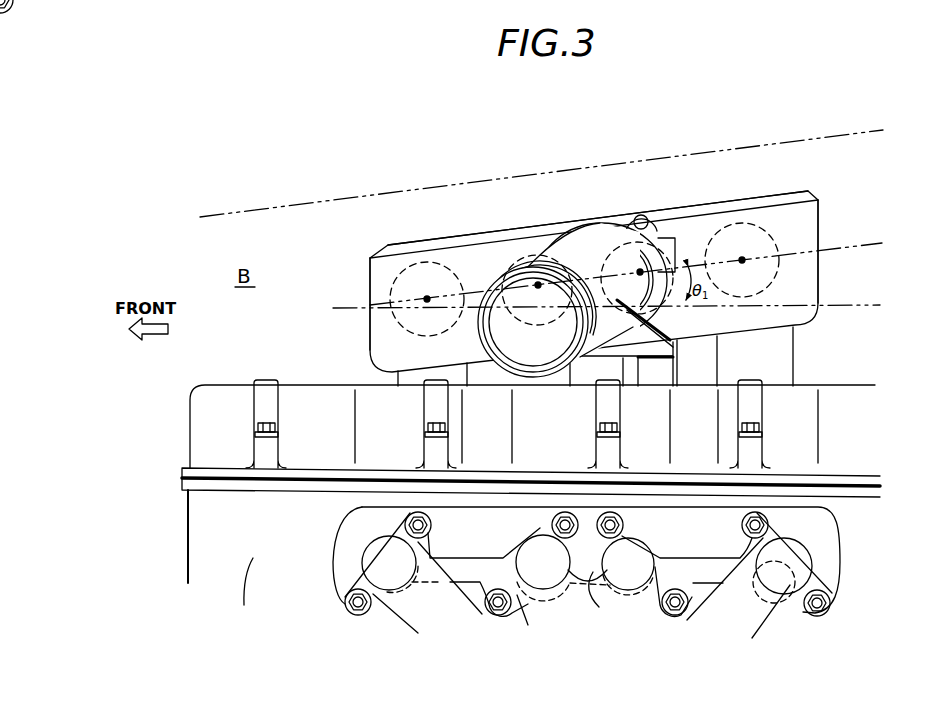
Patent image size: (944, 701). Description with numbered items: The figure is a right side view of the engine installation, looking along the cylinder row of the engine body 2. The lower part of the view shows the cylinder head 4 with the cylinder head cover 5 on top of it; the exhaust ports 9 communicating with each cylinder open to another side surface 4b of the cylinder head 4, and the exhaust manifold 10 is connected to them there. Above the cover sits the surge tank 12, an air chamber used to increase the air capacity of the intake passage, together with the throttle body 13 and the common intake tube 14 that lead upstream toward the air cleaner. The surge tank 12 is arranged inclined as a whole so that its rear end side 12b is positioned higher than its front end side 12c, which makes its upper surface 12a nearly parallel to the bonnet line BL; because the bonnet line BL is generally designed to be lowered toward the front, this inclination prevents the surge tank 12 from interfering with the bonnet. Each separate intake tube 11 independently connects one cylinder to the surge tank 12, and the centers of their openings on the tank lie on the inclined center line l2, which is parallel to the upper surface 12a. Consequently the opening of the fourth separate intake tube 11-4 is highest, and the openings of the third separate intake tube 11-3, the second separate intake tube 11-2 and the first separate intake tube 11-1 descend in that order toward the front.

The engine body 2 is at (170, 518).
The cylinder head 4 is at (182, 583).
The another side surface of the cylinder head 4b is at (238, 600).
The cylinder head cover 5 is at (205, 407).
The exhaust port 9 is at (422, 590).
The exhaust manifold 10 is at (393, 623).
The separate intake tube 11 is at (387, 378).
The first separate intake tube 11-1 is at (381, 252).
The second separate intake tube 11-2 is at (522, 252).
The third separate intake tube 11-3 is at (678, 258).
The fourth separate intake tube 11-4 is at (780, 270).
The surge tank 12 is at (777, 222).
The upper surface of the surge tank 12a is at (450, 243).
The rear end side of the surge tank 12b is at (820, 232).
The front end side of the surge tank 12c is at (370, 283).
The throttle body 13 is at (612, 228).
The common intake tube 14 is at (577, 252).
The bonnet line BL is at (836, 126).
The inclined center line l2 is at (855, 243).